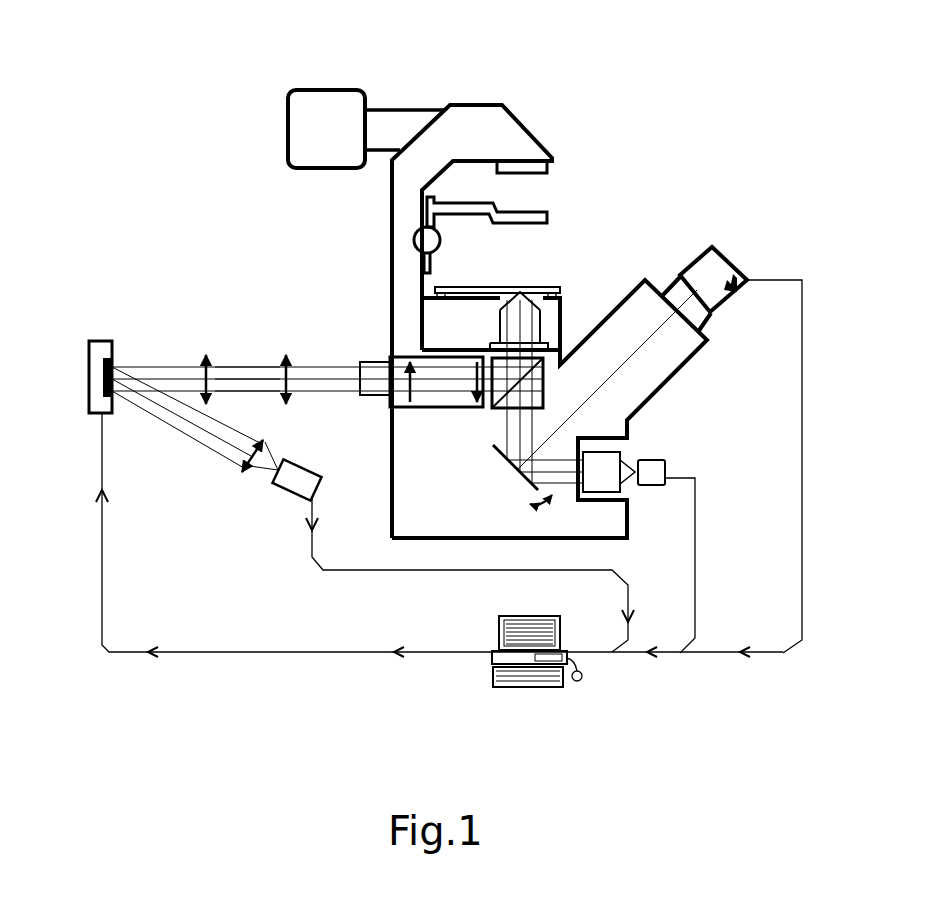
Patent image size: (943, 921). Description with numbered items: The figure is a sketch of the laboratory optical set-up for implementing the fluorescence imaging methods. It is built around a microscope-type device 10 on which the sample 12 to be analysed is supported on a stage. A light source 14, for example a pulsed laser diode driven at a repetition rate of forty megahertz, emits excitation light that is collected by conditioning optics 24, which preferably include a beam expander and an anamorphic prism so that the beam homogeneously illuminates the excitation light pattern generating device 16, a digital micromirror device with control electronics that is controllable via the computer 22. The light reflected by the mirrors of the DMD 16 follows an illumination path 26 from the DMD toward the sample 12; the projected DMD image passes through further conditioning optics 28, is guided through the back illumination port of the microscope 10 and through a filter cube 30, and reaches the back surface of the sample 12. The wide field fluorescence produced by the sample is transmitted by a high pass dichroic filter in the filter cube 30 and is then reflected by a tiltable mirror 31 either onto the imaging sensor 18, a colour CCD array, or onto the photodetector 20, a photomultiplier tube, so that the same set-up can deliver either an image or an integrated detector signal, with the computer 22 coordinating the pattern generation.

The microscope-type device 10 is at (550, 72).
The sample 12 is at (540, 285).
The light source 14 is at (282, 482).
The excitation light pattern generating device 16 is at (92, 357).
The imaging sensor 18 is at (713, 265).
The photodetector 20 is at (660, 463).
The computer 22 is at (520, 680).
The conditioning optics 24 is at (237, 475).
The illumination path 26 is at (237, 372).
The conditioning optics 28 is at (208, 353).
The filter cube 30 is at (545, 388).
The tiltable mirror 31 is at (493, 445).